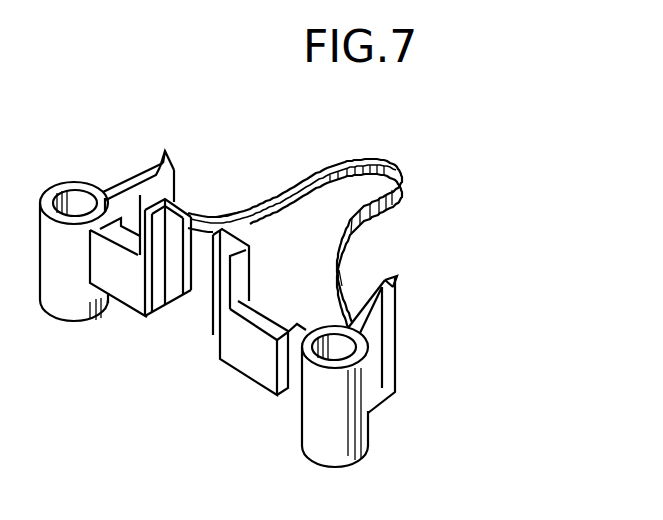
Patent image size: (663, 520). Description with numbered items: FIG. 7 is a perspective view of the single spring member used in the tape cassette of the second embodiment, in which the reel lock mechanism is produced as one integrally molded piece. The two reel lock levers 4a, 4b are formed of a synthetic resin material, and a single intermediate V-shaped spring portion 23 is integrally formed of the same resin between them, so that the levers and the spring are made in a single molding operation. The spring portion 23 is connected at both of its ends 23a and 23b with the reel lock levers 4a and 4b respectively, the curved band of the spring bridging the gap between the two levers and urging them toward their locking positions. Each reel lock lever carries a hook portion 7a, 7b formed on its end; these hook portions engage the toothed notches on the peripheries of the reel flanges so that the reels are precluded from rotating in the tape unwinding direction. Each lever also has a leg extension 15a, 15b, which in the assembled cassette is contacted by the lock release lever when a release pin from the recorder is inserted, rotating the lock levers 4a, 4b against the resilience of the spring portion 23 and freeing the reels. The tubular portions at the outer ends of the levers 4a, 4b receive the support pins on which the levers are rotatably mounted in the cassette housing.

The reel lock lever 4a is at (140, 175).
The reel lock lever 4b is at (376, 347).
The hook portion 7a is at (165, 160).
The hook portion 7b is at (397, 277).
The leg extension 15a is at (175, 268).
The leg extension 15b is at (215, 294).
The intermediate V-shaped spring portion 23 is at (360, 159).
The end of spring portion 23a is at (229, 217).
The end of spring portion 23b is at (347, 292).